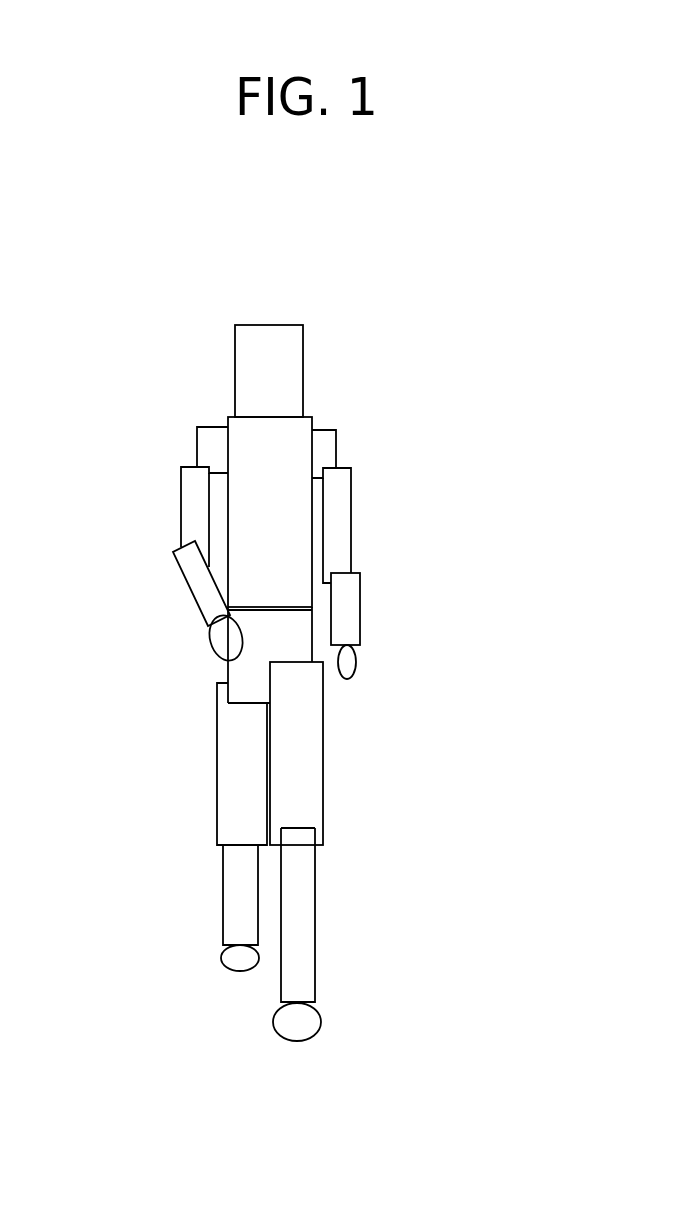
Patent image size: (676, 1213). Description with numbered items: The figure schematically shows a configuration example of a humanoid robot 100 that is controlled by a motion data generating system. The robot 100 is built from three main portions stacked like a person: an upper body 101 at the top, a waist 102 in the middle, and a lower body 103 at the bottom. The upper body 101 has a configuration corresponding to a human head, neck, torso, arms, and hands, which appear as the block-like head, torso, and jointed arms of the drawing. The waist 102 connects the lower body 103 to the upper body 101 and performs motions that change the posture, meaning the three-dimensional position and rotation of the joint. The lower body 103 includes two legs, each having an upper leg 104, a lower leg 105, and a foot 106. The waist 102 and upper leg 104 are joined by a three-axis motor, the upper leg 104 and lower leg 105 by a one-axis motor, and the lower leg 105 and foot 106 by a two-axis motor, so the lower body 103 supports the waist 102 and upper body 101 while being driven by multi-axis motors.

The robot 100 is at (545, 290).
The upper body 101 is at (303, 463).
The waist 102 is at (247, 679).
The lower body 103 is at (130, 743).
The upper leg 104 is at (230, 753).
The lower leg 105 is at (233, 883).
The foot 106 is at (233, 960).